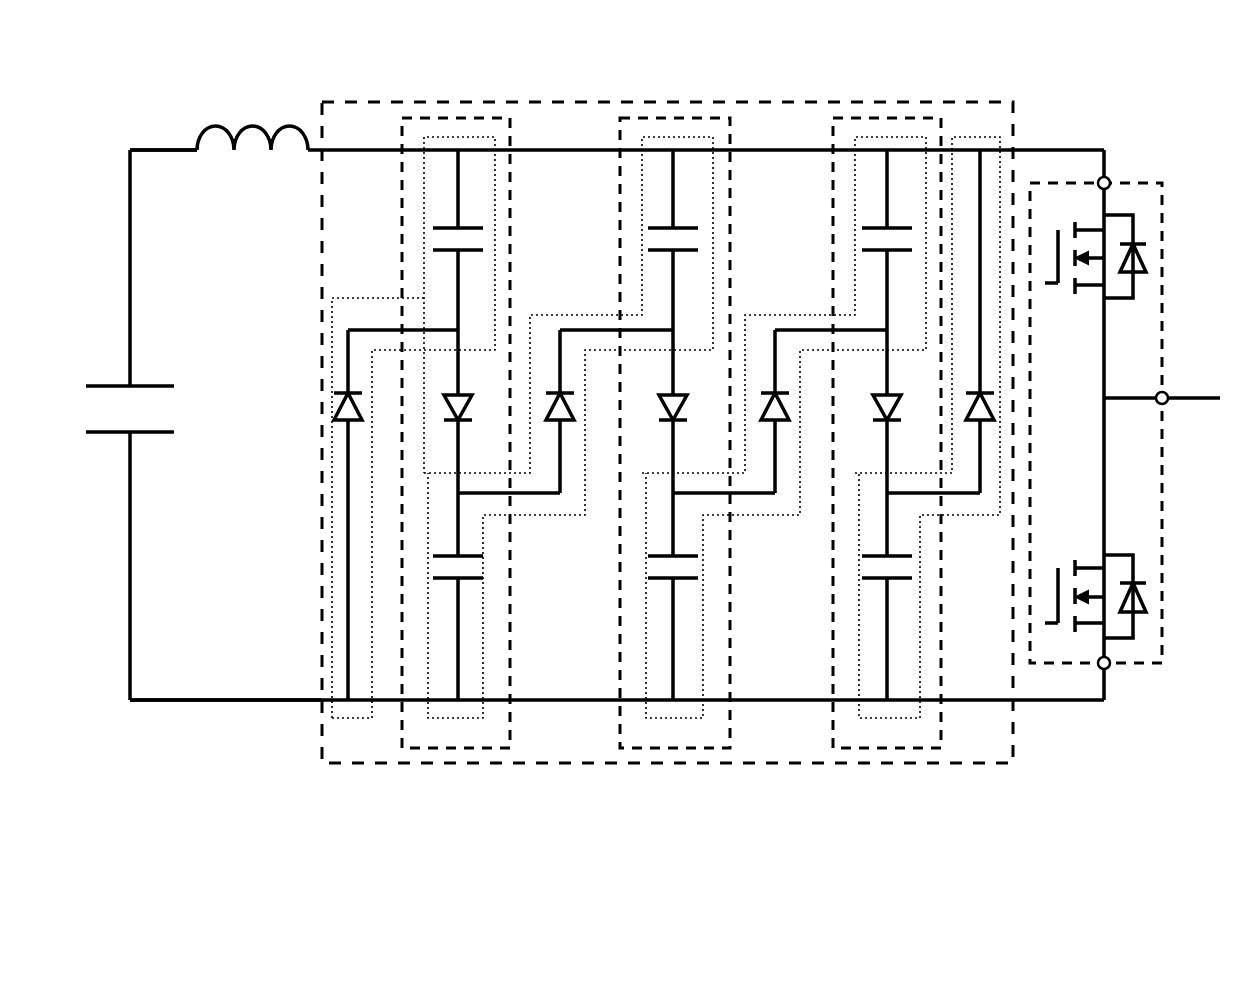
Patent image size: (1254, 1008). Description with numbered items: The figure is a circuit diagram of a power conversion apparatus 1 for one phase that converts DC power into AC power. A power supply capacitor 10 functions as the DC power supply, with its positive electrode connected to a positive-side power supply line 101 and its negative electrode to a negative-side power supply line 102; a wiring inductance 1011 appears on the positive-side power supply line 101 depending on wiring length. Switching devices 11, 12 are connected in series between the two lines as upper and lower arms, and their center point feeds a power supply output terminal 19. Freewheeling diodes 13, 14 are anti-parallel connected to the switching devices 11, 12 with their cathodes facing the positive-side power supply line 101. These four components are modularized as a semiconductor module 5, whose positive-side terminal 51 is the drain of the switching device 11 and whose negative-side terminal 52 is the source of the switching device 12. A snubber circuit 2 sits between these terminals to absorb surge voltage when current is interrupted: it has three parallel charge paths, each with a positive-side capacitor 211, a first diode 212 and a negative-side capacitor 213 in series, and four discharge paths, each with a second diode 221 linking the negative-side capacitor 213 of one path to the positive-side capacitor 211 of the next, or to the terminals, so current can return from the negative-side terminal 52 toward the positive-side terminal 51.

The power conversion apparatus 1 is at (638, 39).
The snubber circuit 2 is at (815, 100).
The semiconductor module 5 is at (1165, 492).
The power supply capacitor 10 is at (168, 435).
The positive-side power supply line 101 is at (178, 153).
The negative-side power supply line 102 is at (178, 703).
The wiring inductance 1011 is at (225, 132).
The switching device 11 is at (1080, 293).
The switching device 12 is at (1080, 565).
The freewheeling diode 13 is at (1140, 285).
The freewheeling diode 14 is at (1140, 630).
The power supply output terminal 19 is at (1168, 392).
The positive-side terminal 51 is at (1112, 178).
The negative-side terminal 52 is at (1112, 668).
The positive-side capacitor 211 is at (487, 252).
The first diode 212 is at (440, 412).
The negative-side capacitor 213 is at (483, 580).
The second diode 221 is at (345, 422).